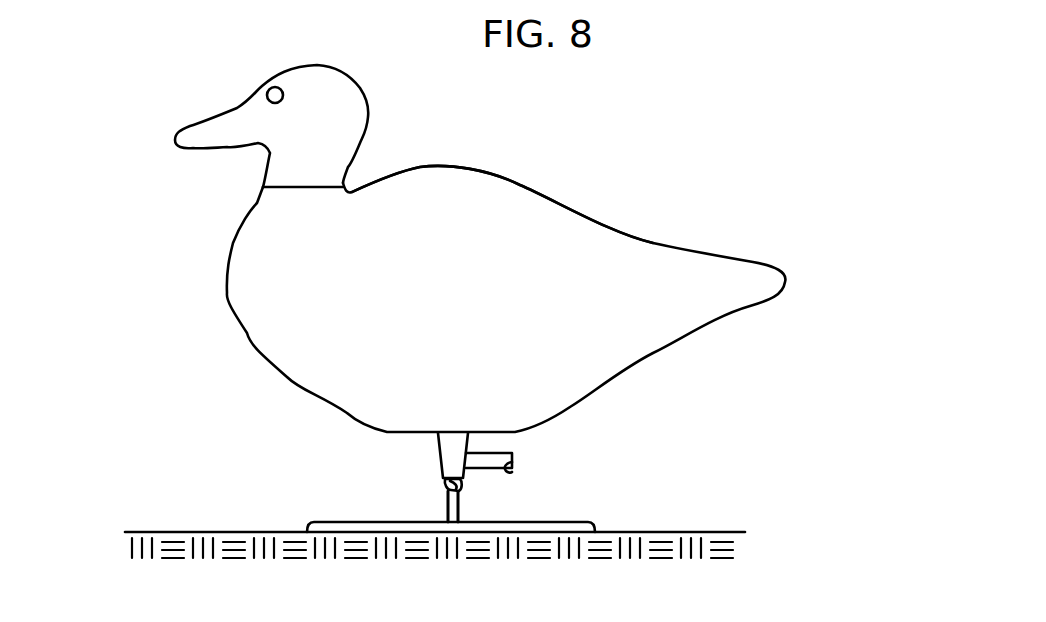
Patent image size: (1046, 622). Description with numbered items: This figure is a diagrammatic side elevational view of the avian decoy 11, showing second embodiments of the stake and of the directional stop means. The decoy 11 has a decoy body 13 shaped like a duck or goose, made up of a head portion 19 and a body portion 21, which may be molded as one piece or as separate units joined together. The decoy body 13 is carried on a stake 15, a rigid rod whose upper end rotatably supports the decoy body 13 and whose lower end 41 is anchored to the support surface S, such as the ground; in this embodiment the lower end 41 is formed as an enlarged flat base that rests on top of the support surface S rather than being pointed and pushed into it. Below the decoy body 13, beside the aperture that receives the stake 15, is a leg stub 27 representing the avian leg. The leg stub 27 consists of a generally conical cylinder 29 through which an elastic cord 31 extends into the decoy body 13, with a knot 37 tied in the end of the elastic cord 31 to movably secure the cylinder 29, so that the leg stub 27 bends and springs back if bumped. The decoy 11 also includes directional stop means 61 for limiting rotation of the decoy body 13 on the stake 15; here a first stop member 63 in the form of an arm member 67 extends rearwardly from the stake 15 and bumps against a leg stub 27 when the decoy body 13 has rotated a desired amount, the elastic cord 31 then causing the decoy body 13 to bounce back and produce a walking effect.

The decoy 11 is at (668, 116).
The decoy body 13 is at (669, 233).
The stake 15 is at (476, 512).
The head portion 19 is at (360, 122).
The body portion 21 is at (584, 188).
The leg stub 27 is at (422, 441).
The conical cylinder 29 is at (447, 455).
The elastic cord 31 is at (444, 486).
The knot 37 is at (447, 492).
The lower end 41 is at (594, 526).
The directional stop means 61 is at (518, 444).
The first stop member 63 is at (515, 462).
The arm member 67 is at (512, 470).
The support surface S is at (174, 532).